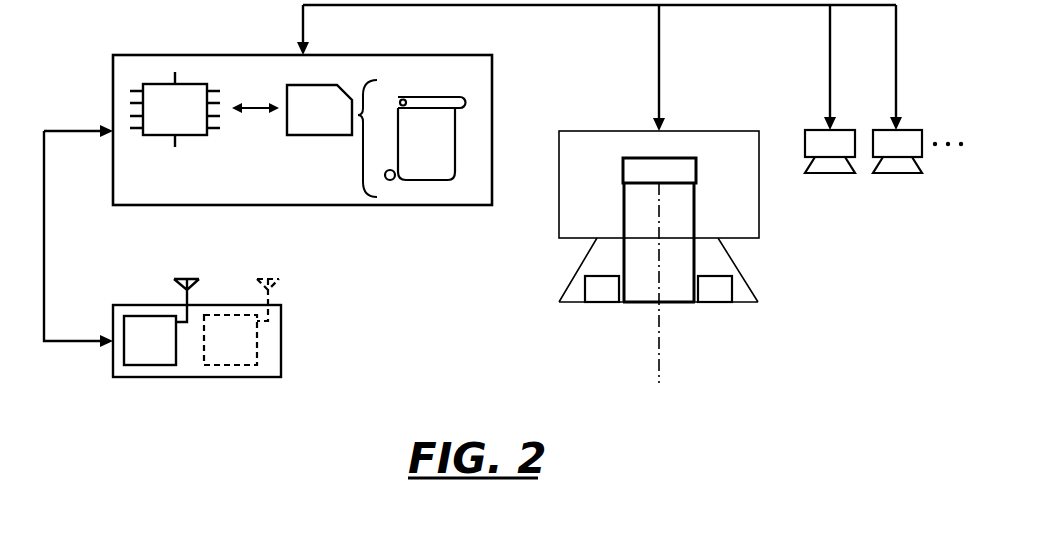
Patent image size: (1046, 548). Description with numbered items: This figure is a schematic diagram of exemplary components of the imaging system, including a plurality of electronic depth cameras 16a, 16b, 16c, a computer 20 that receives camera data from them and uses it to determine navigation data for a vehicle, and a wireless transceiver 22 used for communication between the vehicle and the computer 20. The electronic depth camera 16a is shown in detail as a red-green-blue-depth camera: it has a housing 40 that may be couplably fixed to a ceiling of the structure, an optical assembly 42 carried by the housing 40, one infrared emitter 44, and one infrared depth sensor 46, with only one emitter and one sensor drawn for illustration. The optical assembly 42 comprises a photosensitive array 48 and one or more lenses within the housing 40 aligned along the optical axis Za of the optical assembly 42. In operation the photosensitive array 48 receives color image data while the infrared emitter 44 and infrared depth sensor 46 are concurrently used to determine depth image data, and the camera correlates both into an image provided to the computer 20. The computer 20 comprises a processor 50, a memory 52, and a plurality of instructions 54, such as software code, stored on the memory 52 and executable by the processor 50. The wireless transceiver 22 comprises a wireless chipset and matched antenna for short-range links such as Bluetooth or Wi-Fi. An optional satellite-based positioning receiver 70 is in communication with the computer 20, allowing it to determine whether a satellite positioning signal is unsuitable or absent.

The computer 20 is at (227, 217).
The processor 50 is at (189, 120).
The memory 52 is at (306, 120).
The instructions 54 is at (412, 150).
The wireless transceiver 22 is at (137, 351).
The satellite-based positioning receiver 70 is at (218, 351).
The housing 40 is at (774, 226).
The optical assembly 42 is at (610, 221).
The photosensitive array 48 is at (697, 166).
The infrared emitter 44 is at (598, 304).
The infrared depth sensor 46 is at (720, 304).
The optical axis Za is at (660, 345).
The electronic depth camera 16a is at (593, 117).
The electronic depth camera 16b is at (794, 119).
The electronic depth camera 16c is at (874, 115).